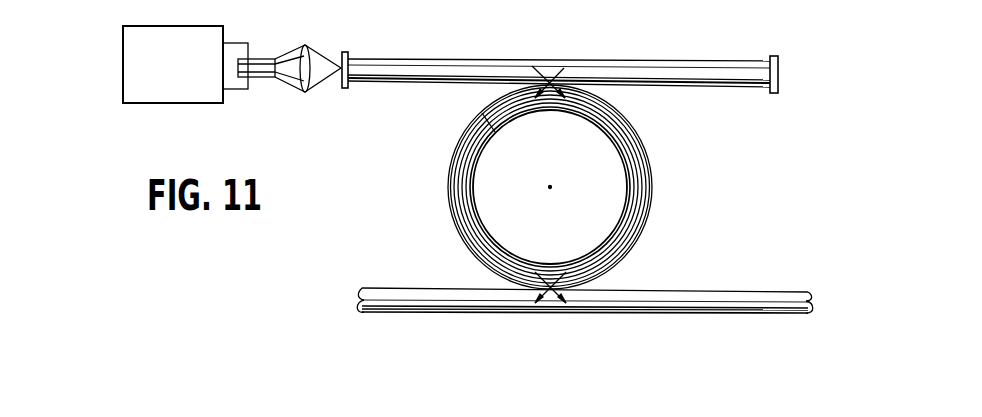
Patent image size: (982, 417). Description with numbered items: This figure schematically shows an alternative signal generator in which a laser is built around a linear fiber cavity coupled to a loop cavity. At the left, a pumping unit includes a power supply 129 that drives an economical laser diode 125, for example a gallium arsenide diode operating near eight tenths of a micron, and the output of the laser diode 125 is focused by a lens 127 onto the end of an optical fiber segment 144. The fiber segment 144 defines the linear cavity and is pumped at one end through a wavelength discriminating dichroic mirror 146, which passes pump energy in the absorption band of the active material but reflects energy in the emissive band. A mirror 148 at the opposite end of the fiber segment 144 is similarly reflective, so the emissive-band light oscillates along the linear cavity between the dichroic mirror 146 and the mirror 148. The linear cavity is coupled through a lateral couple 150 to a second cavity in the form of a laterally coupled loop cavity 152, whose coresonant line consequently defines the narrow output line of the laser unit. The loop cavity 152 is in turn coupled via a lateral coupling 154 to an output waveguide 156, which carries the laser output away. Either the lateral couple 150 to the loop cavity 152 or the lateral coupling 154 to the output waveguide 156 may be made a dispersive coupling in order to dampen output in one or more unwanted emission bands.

The power supply 129 is at (190, 73).
The laser diode 125 is at (266, 60).
The focusing lens 127 is at (312, 58).
The dichroic mirror 146 is at (348, 52).
The optical fiber segment 144 is at (421, 58).
The mirror 148 is at (792, 27).
The lateral couple 150 is at (562, 74).
The loop cavity 152 is at (643, 157).
The lateral coupling 154 is at (618, 284).
The output waveguide 156 is at (686, 302).